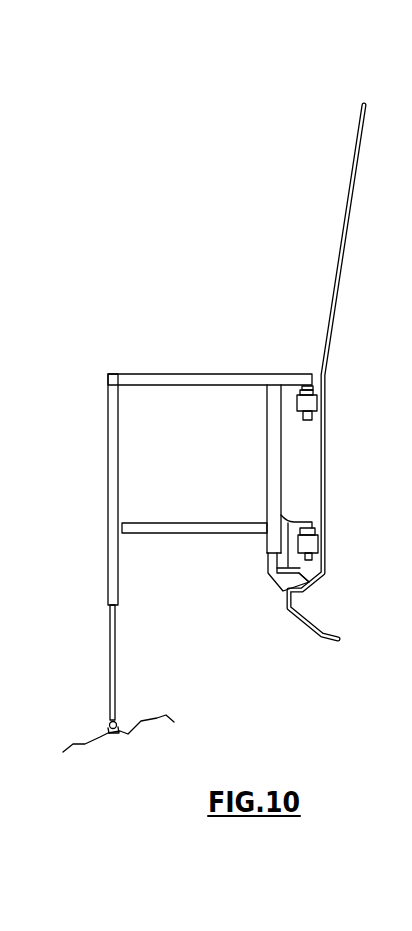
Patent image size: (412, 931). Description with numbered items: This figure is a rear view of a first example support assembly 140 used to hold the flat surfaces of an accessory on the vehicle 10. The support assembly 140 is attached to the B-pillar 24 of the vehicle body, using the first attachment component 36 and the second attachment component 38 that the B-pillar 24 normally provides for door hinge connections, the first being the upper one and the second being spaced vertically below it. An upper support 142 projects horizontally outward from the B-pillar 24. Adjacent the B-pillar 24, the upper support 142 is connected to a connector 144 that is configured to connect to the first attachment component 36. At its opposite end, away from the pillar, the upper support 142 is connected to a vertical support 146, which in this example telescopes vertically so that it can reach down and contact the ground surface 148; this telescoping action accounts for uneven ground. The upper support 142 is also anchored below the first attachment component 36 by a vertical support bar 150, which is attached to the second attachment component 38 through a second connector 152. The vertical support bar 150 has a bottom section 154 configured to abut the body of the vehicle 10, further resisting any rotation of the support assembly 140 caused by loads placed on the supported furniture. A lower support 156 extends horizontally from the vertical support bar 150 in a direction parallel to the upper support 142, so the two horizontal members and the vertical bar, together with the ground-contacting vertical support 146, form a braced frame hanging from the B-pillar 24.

The vehicle 10 is at (336, 119).
The B-pillar 24 is at (349, 183).
The first attachment component 36 is at (305, 403).
The second attachment component 38 is at (318, 546).
The support assembly 140 is at (113, 352).
The upper support 142 is at (173, 380).
The connector 144 is at (317, 388).
The vertical support 146 is at (104, 628).
The ground surface 148 is at (92, 740).
The vertical support bar 150 is at (280, 483).
The connector 152 is at (313, 529).
The bottom section 154 is at (265, 587).
The lower support 156 is at (193, 533).